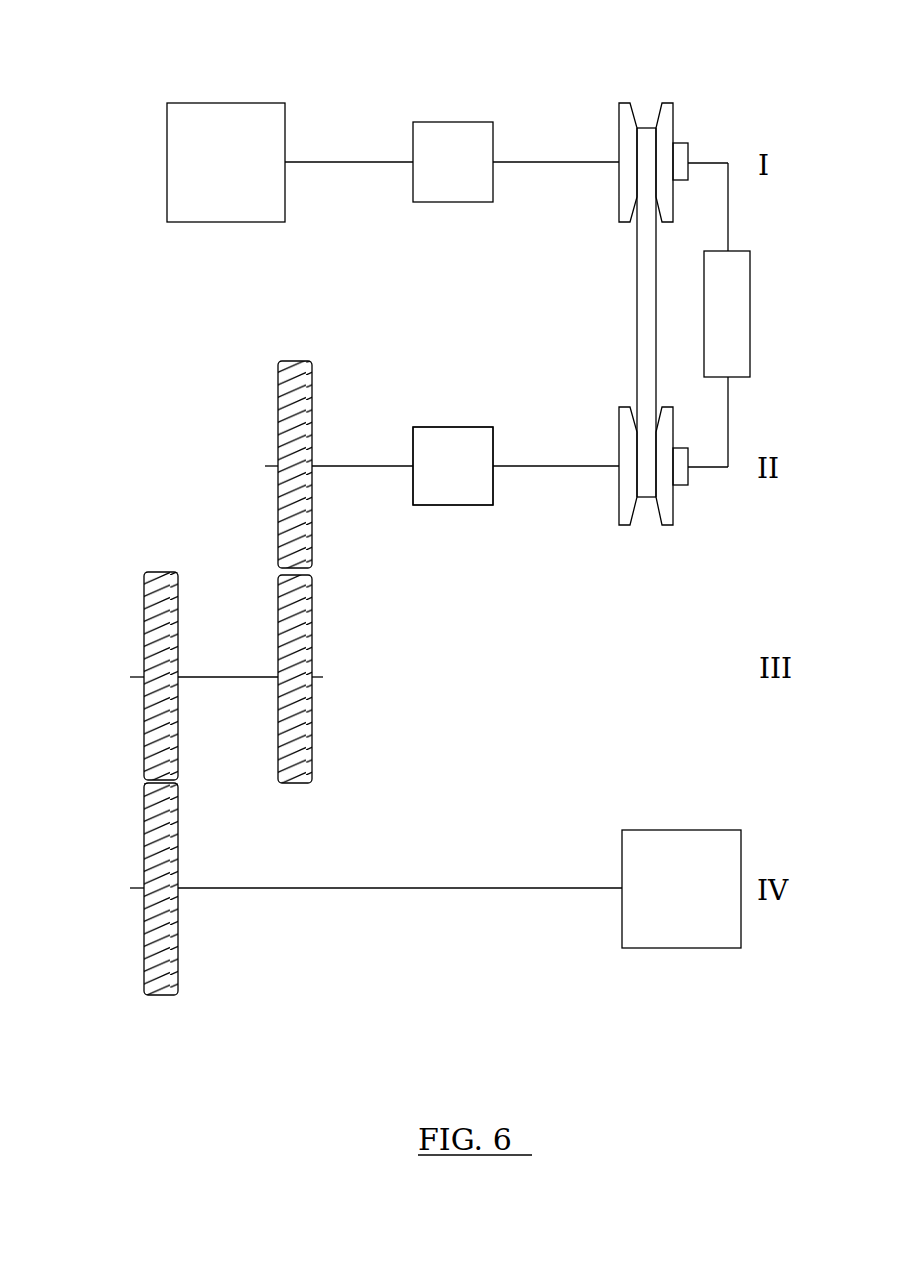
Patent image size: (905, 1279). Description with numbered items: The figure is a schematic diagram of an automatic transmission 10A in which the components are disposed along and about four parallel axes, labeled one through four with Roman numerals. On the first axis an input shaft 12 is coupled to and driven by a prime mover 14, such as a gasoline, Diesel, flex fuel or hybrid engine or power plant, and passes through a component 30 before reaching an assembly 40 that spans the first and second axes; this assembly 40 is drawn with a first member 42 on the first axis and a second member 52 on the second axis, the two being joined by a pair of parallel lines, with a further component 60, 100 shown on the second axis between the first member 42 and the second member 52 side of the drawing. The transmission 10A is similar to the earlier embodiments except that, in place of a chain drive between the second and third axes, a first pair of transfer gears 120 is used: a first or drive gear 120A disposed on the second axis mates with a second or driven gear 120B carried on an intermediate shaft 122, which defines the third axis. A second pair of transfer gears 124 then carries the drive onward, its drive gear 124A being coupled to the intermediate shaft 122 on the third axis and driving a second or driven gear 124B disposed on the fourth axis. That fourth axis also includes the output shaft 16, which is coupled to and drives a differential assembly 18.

The automatic transmission 10A is at (206, 399).
The input shaft 12 is at (340, 162).
The prime mover 14 is at (238, 175).
The output shaft 16 is at (492, 888).
The differential assembly 18 is at (697, 905).
The clutch 30 is at (475, 100).
The continuously variable transmission unit 40 is at (687, 267).
The primary pulley 42 is at (662, 130).
The secondary pulley 52 is at (665, 496).
The clutch device 60 is at (460, 405).
The transfer mechanism 100 is at (453, 466).
The first pair of transfer gears 120 is at (381, 572).
The drive gear 120A is at (302, 400).
The driven gear 120B is at (300, 743).
The intermediate shaft 122 is at (322, 675).
The second pair of transfer gears 124 is at (161, 783).
The drive gear 124A is at (160, 605).
The driven gear 124B is at (165, 955).